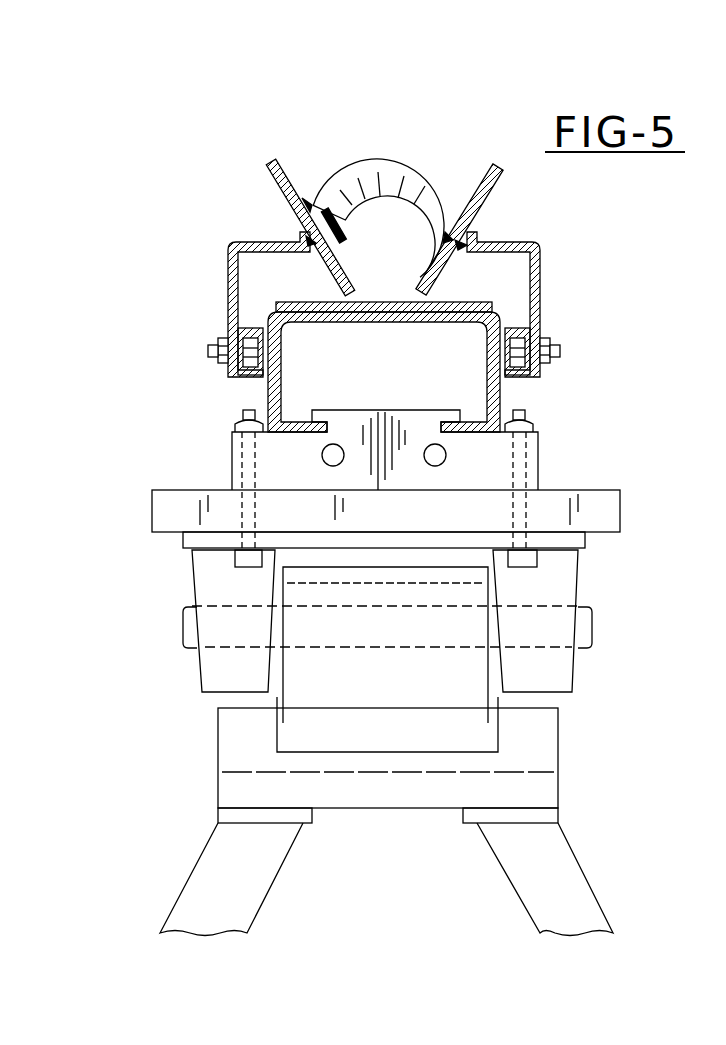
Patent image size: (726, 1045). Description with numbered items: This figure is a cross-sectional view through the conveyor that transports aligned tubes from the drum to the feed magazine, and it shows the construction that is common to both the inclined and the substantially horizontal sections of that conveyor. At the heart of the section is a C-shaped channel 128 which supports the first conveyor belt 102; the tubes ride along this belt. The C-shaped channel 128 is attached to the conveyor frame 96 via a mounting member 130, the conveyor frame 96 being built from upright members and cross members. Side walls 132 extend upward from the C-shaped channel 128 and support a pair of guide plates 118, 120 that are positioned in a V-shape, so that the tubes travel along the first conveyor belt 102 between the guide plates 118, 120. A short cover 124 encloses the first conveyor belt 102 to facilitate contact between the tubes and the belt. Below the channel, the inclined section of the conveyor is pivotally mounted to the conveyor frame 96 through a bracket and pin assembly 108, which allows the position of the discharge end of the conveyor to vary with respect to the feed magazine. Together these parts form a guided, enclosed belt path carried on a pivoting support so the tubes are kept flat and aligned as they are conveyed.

The conveyor frame 96 is at (572, 863).
The first conveyor belt 102 is at (467, 299).
The bracket and pin assembly 108 is at (577, 586).
The guide plate 118 is at (507, 121).
The guide plate 120 is at (288, 173).
The short cover 124 is at (396, 158).
The C-shaped channel 128 is at (499, 395).
The mounting member 130 is at (539, 463).
The side walls 132 is at (229, 276).